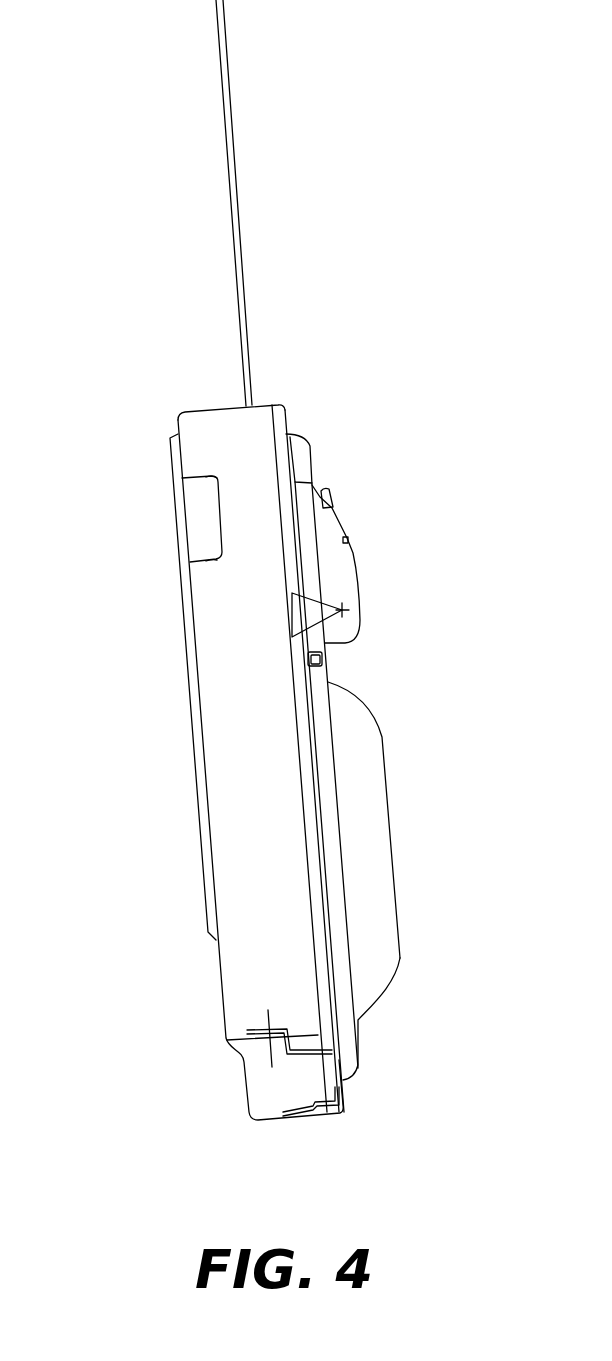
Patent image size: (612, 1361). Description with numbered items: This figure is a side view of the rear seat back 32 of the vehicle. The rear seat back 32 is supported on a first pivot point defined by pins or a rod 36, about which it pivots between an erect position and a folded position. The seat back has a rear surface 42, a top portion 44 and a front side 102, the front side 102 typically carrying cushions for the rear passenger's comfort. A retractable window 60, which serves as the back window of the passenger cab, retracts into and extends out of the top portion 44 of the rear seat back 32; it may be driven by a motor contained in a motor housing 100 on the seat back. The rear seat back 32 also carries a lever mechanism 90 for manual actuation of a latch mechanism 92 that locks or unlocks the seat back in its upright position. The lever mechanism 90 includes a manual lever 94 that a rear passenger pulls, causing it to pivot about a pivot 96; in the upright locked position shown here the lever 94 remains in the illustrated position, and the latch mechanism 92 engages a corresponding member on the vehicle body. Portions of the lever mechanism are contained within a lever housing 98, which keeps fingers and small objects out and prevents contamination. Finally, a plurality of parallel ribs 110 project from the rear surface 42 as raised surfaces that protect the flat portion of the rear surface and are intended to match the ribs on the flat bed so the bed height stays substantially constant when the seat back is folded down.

The rear seat back 32 is at (158, 464).
The rod 36 is at (265, 1025).
The rear surface 42 is at (195, 692).
The top portion 44 is at (200, 408).
The retractable window 60 is at (233, 221).
The lever mechanism 90 is at (350, 537).
The latch mechanism 92 is at (193, 517).
The manual lever 94 is at (335, 488).
The pivot 96 is at (365, 625).
The lever housing 98 is at (352, 578).
The motor housing 100 is at (375, 784).
The front side 102 is at (348, 925).
The parallel ribs 110 is at (200, 782).